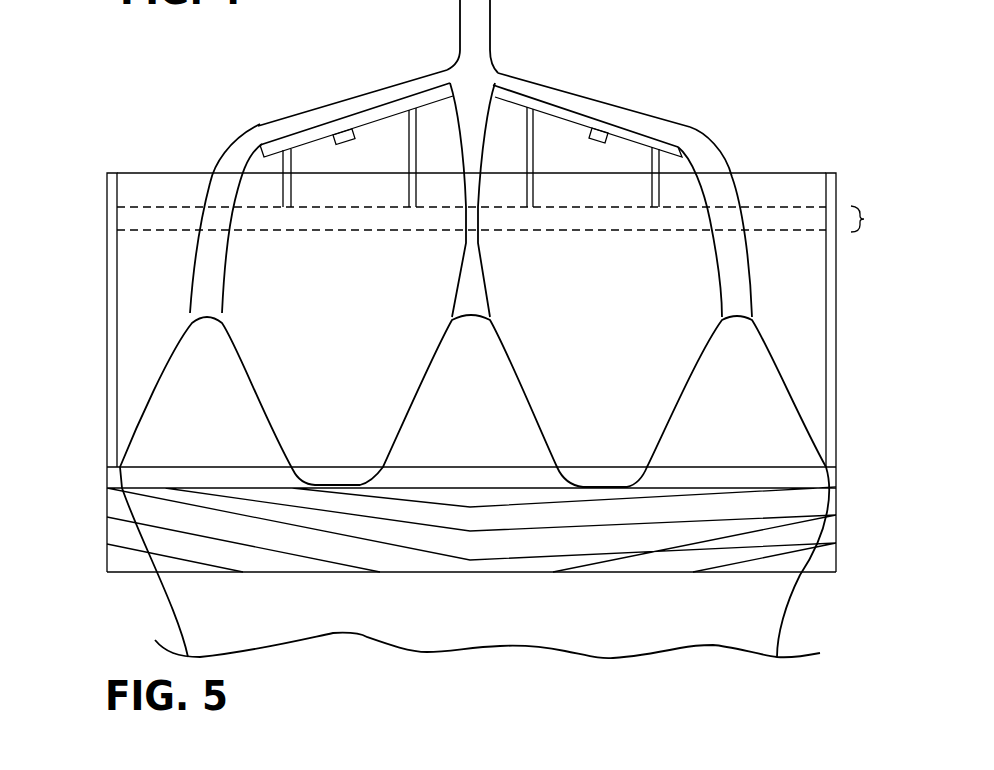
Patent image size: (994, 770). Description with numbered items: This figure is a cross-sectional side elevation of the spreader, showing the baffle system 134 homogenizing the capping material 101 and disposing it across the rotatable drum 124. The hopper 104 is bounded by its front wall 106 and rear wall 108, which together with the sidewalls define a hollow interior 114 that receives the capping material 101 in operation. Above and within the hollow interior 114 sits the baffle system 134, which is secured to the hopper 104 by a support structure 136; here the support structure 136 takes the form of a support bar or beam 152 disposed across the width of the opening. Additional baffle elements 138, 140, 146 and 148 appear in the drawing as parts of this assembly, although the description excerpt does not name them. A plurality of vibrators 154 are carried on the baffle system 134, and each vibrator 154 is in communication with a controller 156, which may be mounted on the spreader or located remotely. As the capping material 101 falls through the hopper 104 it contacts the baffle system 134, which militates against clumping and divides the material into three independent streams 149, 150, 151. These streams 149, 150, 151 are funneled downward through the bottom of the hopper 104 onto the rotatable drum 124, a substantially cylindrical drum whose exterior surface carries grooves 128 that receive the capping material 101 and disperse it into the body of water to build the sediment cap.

The capping material 101 is at (500, 618).
The hopper 104 is at (810, 183).
The front wall 106 is at (837, 319).
The rear wall 108 is at (107, 393).
The hollow interior 114 is at (145, 236).
The rotatable drum 124 is at (836, 562).
The grooves 128 is at (836, 514).
The baffle system 134 is at (471, 78).
The support structure 136 is at (660, 166).
The left rail 138 is at (326, 79).
The right rail 140 is at (598, 73).
The inclined feed ducts 146 is at (268, 133).
The main feed duct 148 is at (460, 53).
The independent stream 149 is at (228, 275).
The independent stream 150 is at (748, 252).
The independent stream 151 is at (481, 277).
The support bar or beam 152 is at (127, 218).
The vibrators 154 is at (340, 142).
The controller 156 is at (864, 219).